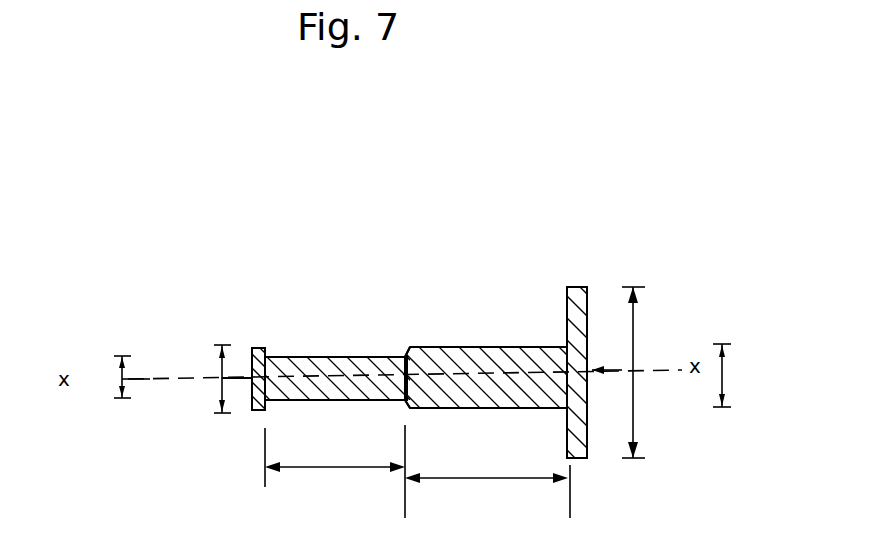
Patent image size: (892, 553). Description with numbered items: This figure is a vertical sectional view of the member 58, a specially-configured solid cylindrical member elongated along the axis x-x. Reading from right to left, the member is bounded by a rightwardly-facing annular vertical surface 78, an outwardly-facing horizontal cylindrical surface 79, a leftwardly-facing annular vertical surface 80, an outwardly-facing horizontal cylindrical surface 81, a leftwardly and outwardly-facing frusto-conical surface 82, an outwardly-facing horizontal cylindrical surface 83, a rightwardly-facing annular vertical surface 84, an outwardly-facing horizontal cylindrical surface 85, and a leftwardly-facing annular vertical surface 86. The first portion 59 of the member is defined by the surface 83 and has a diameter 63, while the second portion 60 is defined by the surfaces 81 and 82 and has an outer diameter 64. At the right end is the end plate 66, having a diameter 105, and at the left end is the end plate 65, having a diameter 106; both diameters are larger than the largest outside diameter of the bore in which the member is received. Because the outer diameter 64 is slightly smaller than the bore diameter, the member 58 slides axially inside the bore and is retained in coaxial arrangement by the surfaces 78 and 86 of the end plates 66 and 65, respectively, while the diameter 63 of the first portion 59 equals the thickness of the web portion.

The member 58 is at (218, 278).
The first portion 59 is at (340, 469).
The second portion 60 is at (495, 480).
The diameter 63 is at (115, 384).
The outer diameter 64 is at (733, 376).
The end plate 65 is at (258, 421).
The end plate 66 is at (580, 473).
The rightwardly-facing annular vertical surface 78 is at (612, 360).
The outwardly-facing horizontal cylindrical surface 79 is at (579, 287).
The leftwardly-facing annular vertical surface 80 is at (565, 316).
The outwardly-facing horizontal cylindrical surface 81 is at (434, 346).
The leftwardly and outwardly-facing frusto-conical surface 82 is at (407, 348).
The outwardly-facing horizontal cylindrical surface 83 is at (304, 401).
The rightwardly-facing annular vertical surface 84 is at (263, 358).
The outwardly-facing horizontal cylindrical surface 85 is at (253, 347).
The leftwardly-facing annular vertical surface 86 is at (219, 393).
The diameter 105 is at (640, 315).
The diameter 106 is at (216, 362).